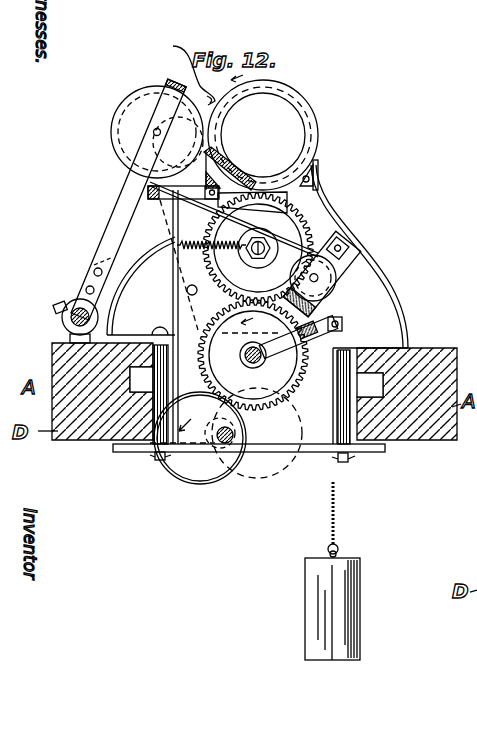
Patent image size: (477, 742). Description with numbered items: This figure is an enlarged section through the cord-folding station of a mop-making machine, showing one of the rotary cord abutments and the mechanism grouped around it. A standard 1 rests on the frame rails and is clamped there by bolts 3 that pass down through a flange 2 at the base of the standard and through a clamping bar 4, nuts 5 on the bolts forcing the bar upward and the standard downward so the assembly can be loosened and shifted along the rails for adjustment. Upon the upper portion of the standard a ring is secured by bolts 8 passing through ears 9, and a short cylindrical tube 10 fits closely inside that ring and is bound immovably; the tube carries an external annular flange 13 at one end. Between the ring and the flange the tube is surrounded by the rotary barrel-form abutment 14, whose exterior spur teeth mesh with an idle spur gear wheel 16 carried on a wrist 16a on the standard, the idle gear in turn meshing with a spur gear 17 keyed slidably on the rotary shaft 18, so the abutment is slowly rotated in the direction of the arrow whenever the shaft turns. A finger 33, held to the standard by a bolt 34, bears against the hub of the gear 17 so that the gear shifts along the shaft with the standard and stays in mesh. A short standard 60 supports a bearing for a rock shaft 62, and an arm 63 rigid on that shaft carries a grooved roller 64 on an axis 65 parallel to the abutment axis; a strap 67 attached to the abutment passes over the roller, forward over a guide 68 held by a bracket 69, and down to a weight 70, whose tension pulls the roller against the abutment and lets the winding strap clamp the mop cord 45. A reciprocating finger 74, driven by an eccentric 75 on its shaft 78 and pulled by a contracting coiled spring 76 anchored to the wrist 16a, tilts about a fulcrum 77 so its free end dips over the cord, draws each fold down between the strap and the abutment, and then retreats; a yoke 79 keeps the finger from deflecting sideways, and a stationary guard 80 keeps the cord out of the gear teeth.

The standard 1 is at (393, 290).
The flange 2 is at (368, 346).
The bolt 3 is at (146, 426).
The clamping bar 4 is at (273, 458).
The nut 5 is at (165, 462).
The bolt 8 is at (318, 178).
The ear 9 is at (320, 188).
The tube 10 is at (218, 148).
The flange 13 is at (216, 112).
The abutment 14 is at (229, 171).
The idle spur gear wheel 16 is at (300, 227).
The wrist 16a is at (258, 258).
The spur gear 17 is at (282, 386).
The rotary shaft 18 is at (265, 362).
The finger 33 is at (305, 346).
The bolt 34 is at (343, 325).
The cord 45 is at (173, 46).
The standard 60 is at (69, 338).
The rock shaft 62 is at (66, 306).
The arm 63 is at (93, 268).
The grooved roller 64 is at (134, 101).
The axis 65 is at (154, 133).
The strap 67 is at (244, 219).
The guide 68 is at (336, 285).
The bracket 69 is at (345, 258).
The weight 70 is at (362, 601).
The reciprocating finger 74 is at (198, 90).
The eccentric 75 is at (202, 484).
The contracting coiled spring 76 is at (222, 250).
The fulcrum 77 is at (186, 290).
The shaft 78 is at (232, 446).
The yoke 79 is at (147, 192).
The guard 80 is at (290, 207).